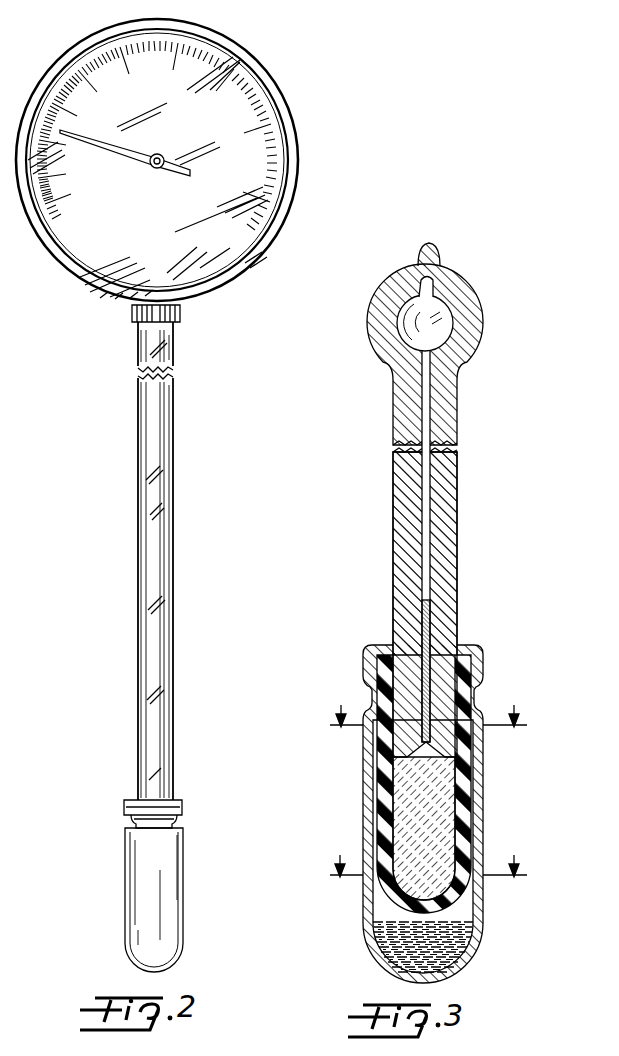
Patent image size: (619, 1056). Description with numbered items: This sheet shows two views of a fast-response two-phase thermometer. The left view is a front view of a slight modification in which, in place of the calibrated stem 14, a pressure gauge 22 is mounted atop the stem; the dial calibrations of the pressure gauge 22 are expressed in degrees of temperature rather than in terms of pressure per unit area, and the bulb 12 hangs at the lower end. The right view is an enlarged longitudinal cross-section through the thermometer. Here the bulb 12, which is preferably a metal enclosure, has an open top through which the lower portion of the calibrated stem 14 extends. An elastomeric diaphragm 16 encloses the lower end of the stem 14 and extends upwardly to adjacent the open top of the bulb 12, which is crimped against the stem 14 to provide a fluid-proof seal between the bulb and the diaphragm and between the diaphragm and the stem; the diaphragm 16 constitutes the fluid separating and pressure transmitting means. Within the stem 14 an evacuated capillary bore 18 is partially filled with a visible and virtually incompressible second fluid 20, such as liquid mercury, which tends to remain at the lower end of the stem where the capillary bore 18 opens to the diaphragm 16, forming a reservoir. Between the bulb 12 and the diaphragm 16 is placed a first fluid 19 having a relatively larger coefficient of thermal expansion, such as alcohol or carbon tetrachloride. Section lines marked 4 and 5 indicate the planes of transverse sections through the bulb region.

In FIG. 2, the pressure gauge 22 is at (248, 243).
In FIG. 2, the bulb 12 is at (182, 906).
In FIG. 3, the bulb 12 is at (483, 823).
In FIG. 3, the calibrated stem 14 is at (457, 573).
In FIG. 3, the elastomeric diaphragm 16 is at (463, 795).
In FIG. 3, the capillary bore 18 is at (433, 512).
In FIG. 3, the first fluid 19 is at (462, 928).
In FIG. 3, the second fluid 20 is at (405, 818).
In FIG. 3, the section line 4- 4 is at (428, 726).
In FIG. 3, the section line 5- 5 is at (428, 877).